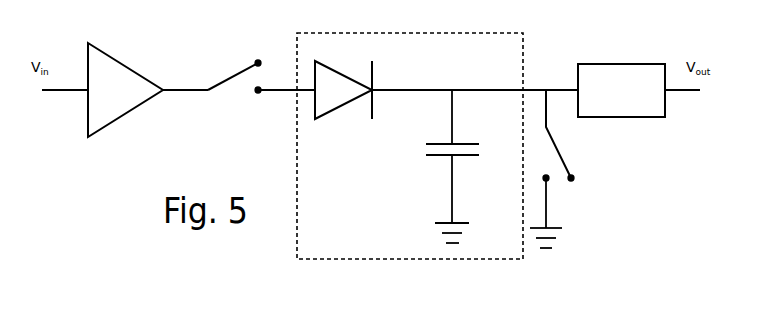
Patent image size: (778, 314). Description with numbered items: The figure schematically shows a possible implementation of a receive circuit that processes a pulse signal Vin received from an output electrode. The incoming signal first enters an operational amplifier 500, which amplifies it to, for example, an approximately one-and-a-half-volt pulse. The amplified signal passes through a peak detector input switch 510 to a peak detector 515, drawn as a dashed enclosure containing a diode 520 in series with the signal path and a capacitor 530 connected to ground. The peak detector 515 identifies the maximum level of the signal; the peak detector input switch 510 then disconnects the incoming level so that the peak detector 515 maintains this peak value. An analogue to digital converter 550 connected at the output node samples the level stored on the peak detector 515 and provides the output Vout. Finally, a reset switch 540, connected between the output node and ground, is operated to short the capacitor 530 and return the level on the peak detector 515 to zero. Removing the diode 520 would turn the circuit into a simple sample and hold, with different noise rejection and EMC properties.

The amplifier 500 is at (125, 90).
The peak detector input switch 510 is at (234, 90).
The peak detector 515 is at (410, 146).
The diode 520 is at (343, 102).
The capacitor 530 is at (462, 166).
The reset switch 540 is at (569, 169).
The analogue to digital converter (ADC) 550 is at (621, 91).